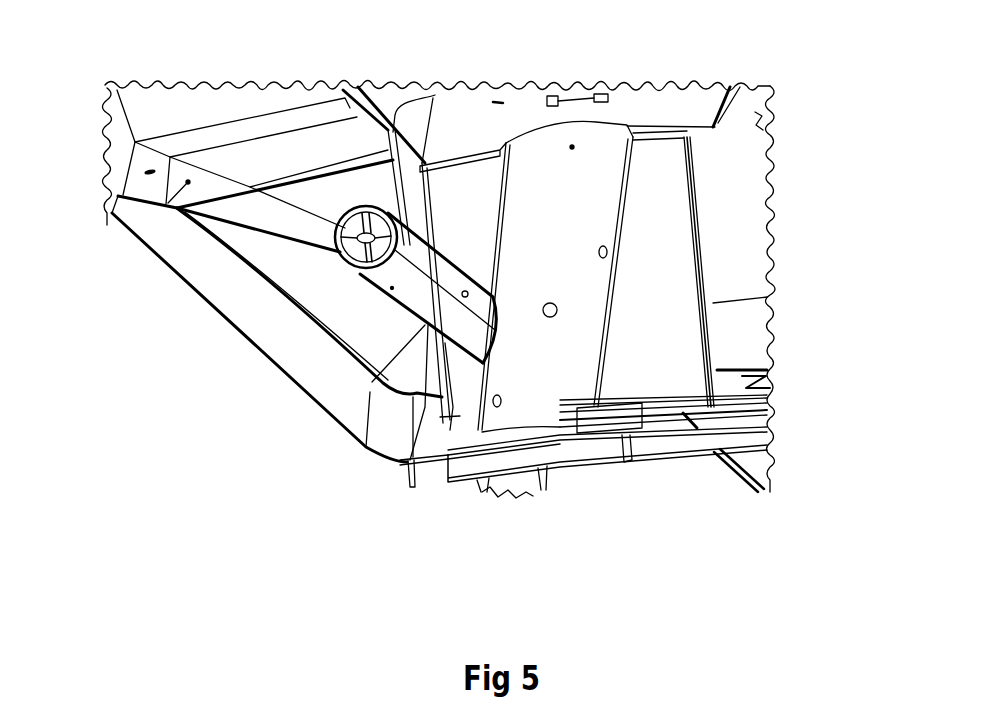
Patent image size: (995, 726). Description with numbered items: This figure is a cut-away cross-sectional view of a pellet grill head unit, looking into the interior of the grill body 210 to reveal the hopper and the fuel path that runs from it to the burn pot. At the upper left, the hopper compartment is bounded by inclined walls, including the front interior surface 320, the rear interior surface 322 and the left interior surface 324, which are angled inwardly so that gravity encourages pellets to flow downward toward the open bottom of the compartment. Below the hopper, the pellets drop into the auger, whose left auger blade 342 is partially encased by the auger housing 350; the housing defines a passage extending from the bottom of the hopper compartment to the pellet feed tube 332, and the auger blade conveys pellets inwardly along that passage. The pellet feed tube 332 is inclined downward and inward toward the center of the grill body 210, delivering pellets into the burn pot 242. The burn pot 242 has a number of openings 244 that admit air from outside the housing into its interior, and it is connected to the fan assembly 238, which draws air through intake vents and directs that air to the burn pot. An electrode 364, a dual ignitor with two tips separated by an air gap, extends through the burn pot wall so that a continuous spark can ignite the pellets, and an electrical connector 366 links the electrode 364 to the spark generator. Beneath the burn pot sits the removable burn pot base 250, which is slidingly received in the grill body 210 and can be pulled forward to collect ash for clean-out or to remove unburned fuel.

The grill body 210 is at (292, 385).
The fan assembly 238 is at (702, 208).
The burn pot 242 is at (582, 204).
The openings 244 is at (580, 312).
The burn pot base 250 is at (404, 480).
The front interior surface 320 is at (124, 196).
The rear interior surface 322 is at (397, 158).
The left interior surface 324 is at (248, 131).
The pellet feed tube 332 is at (263, 332).
The left auger blade 342 is at (330, 262).
The auger housing 350 is at (333, 266).
The electrode 364 is at (577, 425).
The electrical connector 366 is at (685, 423).